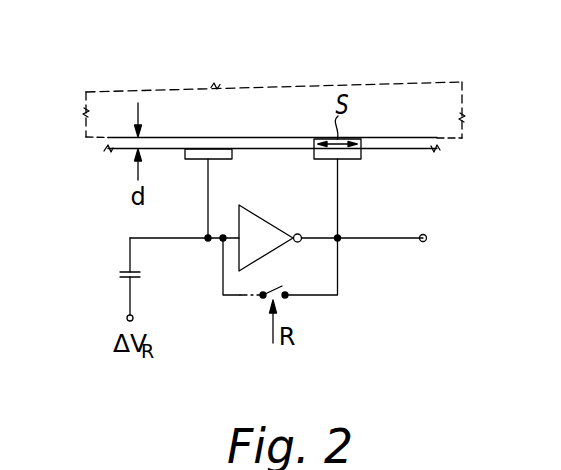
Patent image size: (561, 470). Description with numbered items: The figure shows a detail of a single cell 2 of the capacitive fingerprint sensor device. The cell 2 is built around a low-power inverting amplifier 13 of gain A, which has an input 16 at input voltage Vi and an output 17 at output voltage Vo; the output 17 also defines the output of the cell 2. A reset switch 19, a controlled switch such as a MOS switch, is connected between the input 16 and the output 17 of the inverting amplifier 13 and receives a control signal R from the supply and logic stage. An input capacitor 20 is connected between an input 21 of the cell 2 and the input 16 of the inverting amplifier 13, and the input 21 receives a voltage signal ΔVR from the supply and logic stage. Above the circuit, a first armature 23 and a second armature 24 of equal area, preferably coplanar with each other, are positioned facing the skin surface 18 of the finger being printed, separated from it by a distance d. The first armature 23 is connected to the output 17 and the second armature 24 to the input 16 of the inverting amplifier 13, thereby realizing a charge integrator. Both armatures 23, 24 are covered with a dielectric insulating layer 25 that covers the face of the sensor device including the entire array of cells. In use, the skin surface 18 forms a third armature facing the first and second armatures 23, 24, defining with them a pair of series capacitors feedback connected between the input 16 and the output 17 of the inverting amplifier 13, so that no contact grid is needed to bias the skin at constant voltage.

The cell 2 is at (402, 328).
The inverting amplifier 13 is at (252, 225).
The input 16 is at (207, 242).
The output 17 is at (425, 242).
The skin surface 18 is at (290, 88).
The reset switch 19 is at (275, 287).
The input capacitor 20 is at (120, 275).
The input 21 is at (126, 318).
The first armature 23 is at (350, 160).
The second armature 24 is at (194, 155).
The dielectric insulating layer 25 is at (424, 150).